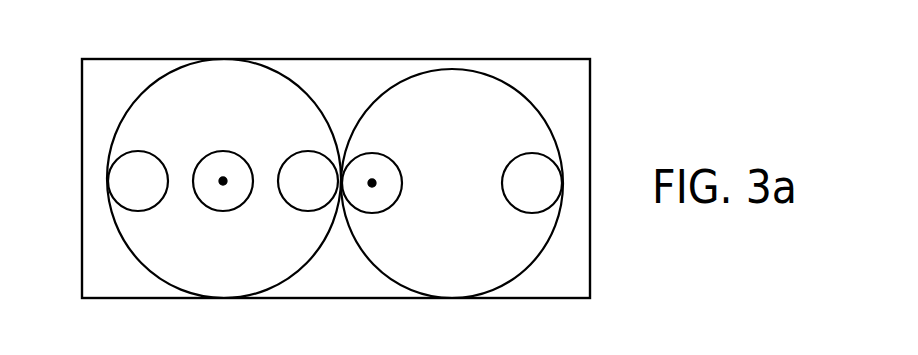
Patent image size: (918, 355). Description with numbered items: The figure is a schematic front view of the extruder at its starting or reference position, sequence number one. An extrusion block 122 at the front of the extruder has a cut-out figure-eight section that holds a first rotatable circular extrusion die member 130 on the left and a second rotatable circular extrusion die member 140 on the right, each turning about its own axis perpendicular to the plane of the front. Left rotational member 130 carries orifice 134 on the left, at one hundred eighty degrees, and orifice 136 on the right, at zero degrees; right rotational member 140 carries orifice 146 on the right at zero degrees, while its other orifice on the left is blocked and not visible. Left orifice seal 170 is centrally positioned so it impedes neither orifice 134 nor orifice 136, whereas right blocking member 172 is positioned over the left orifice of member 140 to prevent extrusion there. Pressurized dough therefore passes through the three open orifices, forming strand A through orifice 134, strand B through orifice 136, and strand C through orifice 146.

The extrusion block 122 is at (592, 118).
The first rotatable circular extrusion die member 130 is at (243, 59).
The second rotatable circular extrusion die member 140 is at (455, 82).
The orifice 134 is at (121, 197).
The orifice 136 is at (318, 197).
The orifice 146 is at (553, 197).
The left orifice seal 170 is at (216, 160).
The right orifice seal 172 is at (365, 158).